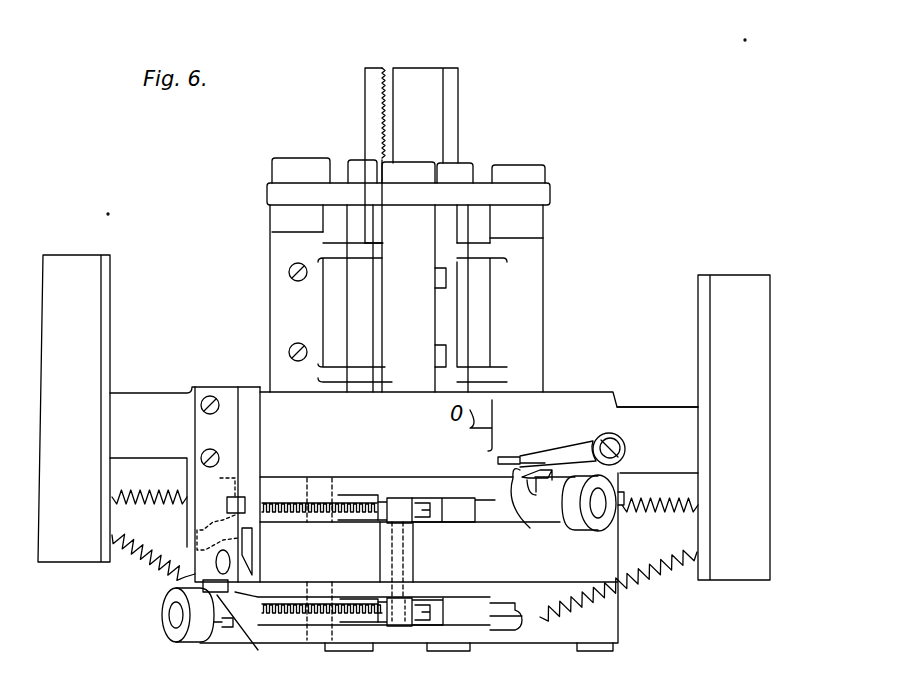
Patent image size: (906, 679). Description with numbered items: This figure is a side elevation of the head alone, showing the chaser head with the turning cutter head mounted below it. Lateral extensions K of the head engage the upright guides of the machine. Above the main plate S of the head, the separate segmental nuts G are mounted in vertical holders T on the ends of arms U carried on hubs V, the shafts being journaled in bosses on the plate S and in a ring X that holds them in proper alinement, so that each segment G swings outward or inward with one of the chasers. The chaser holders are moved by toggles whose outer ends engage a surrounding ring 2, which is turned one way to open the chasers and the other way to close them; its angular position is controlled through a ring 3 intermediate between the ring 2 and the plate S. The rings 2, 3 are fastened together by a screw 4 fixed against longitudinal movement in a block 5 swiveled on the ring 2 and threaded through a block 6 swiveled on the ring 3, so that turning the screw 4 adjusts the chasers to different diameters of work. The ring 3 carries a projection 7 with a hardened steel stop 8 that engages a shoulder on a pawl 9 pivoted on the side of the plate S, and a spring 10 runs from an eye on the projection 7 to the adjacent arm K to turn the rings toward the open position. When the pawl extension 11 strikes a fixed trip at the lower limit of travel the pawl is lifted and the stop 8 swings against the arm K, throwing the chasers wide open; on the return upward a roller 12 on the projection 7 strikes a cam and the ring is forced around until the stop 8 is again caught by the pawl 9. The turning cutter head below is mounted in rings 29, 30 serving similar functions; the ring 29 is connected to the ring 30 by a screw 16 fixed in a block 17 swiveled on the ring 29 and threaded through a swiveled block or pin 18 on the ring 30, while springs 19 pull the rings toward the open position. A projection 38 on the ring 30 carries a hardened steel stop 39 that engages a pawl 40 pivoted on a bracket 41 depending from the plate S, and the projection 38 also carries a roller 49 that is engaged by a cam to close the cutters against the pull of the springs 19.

The segmental nut G is at (365, 117).
The vertical holder T is at (348, 168).
The ring X is at (337, 190).
The arm U is at (330, 241).
The hub V is at (268, 278).
The main plate of the head S is at (611, 396).
The lateral extension of the head K is at (677, 412).
The ring 2 is at (449, 558).
The ring 3 is at (436, 495).
The screw 4 is at (345, 500).
The block 5 is at (397, 497).
The block 6 is at (320, 515).
The projection 7 is at (525, 503).
The hardened steel stop 8 is at (537, 488).
The pawl 9 is at (565, 455).
The spring 10 is at (164, 488).
The extension of the pawl 11 is at (498, 471).
The roller 12 is at (581, 534).
The screw 16 is at (350, 600).
The block 17 is at (396, 625).
The swiveled block or pin 18 is at (318, 600).
The spring 19 is at (146, 563).
The ring 29 is at (468, 581).
The ring 30 is at (473, 640).
The projection 38 is at (216, 640).
The hardened steel stop 39 is at (248, 632).
The pawl 40 is at (228, 592).
The bracket 41 is at (207, 503).
The roller 49 is at (186, 644).